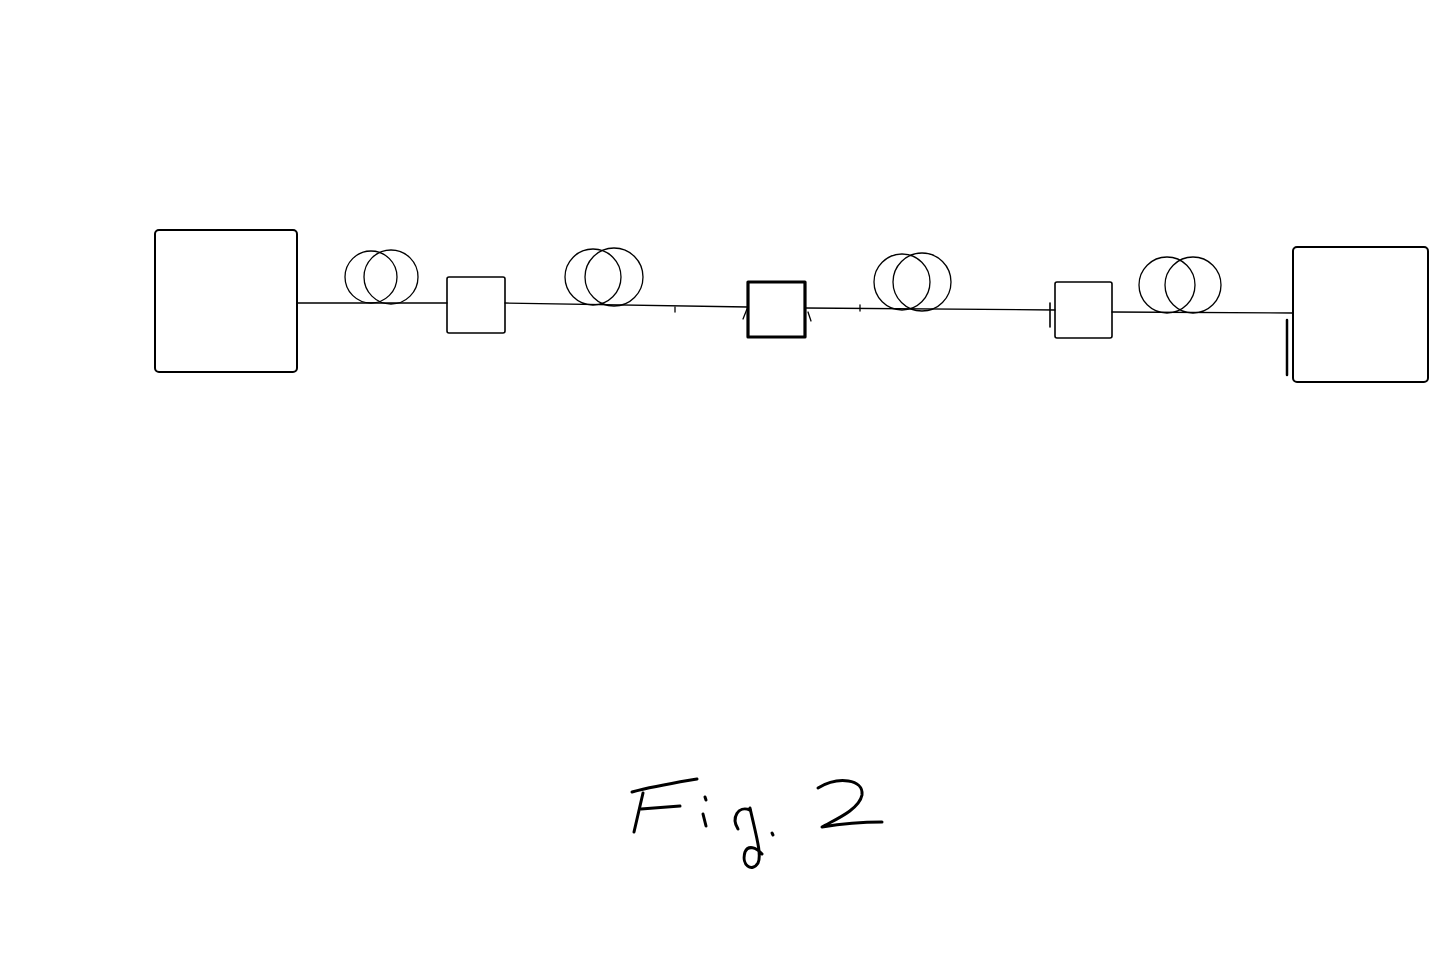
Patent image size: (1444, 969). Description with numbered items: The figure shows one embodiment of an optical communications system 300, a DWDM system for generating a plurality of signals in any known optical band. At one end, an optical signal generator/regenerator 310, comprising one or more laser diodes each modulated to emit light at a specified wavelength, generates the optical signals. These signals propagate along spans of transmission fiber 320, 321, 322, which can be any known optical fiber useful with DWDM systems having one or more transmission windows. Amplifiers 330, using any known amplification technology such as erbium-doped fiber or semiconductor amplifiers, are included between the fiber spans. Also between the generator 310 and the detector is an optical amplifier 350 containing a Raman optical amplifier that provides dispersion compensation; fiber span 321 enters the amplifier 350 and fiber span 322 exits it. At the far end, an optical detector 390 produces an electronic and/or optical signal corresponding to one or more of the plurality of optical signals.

The optical communications system 300 is at (1017, 52).
The optical signal generator/regenerator 310 is at (226, 301).
The span of transmission fiber 320 is at (403, 247).
The fiber span 321 is at (628, 252).
The fiber span 322 is at (925, 252).
The amplifier 330 is at (462, 267).
The optical amplifier 350 is at (775, 339).
The optical detector 390 is at (1357, 315).